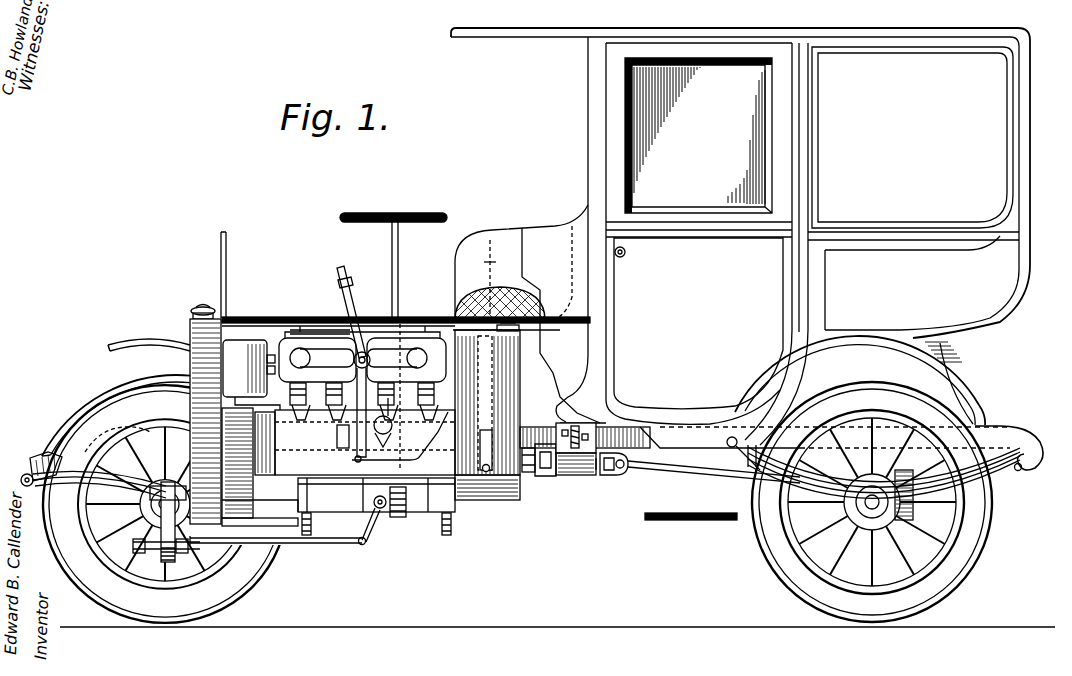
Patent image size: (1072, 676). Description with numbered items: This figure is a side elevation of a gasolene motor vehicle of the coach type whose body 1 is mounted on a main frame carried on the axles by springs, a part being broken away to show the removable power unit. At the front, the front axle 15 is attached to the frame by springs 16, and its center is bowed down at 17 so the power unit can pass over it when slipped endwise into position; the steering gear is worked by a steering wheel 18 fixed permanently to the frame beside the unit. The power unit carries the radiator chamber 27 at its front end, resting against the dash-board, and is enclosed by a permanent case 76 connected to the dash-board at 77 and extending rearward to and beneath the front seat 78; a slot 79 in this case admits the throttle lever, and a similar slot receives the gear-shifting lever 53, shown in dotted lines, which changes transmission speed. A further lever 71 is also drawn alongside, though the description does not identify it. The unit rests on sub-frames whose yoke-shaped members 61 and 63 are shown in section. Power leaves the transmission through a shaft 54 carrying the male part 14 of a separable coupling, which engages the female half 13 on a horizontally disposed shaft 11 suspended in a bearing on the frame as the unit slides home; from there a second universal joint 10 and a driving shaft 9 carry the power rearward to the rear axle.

The body 1 is at (990, 286).
The driving shaft 9 is at (712, 470).
The second universal joint 10 is at (622, 470).
The horizontally disposed shaft 11 is at (606, 455).
The female half of slip coupling 13 is at (546, 476).
The male part of coupling 14 is at (537, 482).
The front axle 15 is at (160, 549).
The springs 16 is at (68, 457).
The bowed-down center of front axle 17 is at (132, 510).
The steering wheel 18 is at (395, 214).
The radiator chamber 27 is at (190, 333).
The operating lever 53 is at (520, 280).
The shaft 54 is at (527, 478).
The yoke-shaped members 61 is at (307, 536).
The yoke-shaped members 63 is at (200, 545).
The control lever 71 is at (352, 298).
The permanent case 76 is at (264, 318).
The connection of case to dash-board 77 is at (214, 315).
The front seat 78 is at (455, 312).
The slot 79 is at (338, 319).